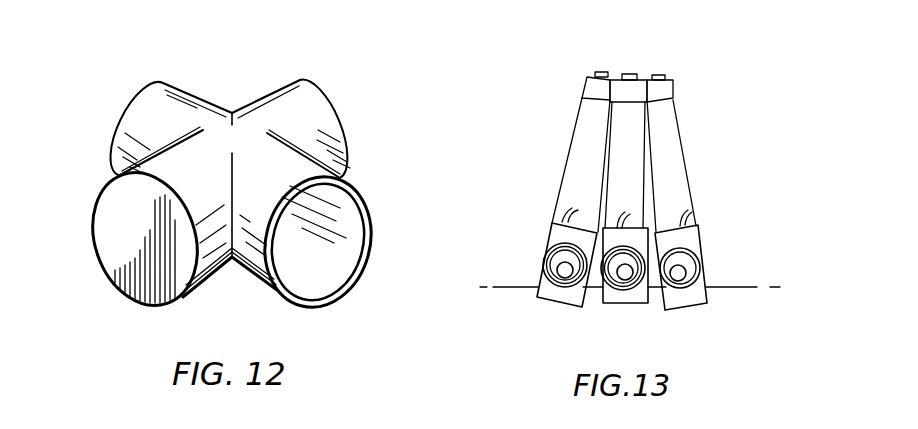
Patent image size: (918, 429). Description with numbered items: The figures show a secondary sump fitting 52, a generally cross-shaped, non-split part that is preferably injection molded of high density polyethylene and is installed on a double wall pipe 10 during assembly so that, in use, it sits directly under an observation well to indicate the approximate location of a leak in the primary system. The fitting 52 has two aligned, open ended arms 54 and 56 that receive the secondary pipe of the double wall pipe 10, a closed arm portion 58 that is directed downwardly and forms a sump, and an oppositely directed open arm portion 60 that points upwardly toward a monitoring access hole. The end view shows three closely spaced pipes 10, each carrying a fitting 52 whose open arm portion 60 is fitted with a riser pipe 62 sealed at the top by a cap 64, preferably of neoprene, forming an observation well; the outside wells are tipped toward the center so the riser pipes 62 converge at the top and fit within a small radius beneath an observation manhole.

In FIG. 13, the double wall pipe 10 is at (690, 270).
In FIG. 12, the secondary sump fitting 52 is at (330, 138).
In FIG. 13, the secondary sump fitting 52 is at (550, 240).
In FIG. 12, the open ended arm 54 is at (147, 110).
In FIG. 12, the open ended arm 56 is at (355, 181).
In FIG. 12, the closed arm portion 58 is at (113, 177).
In FIG. 12, the open arm portion 60 is at (315, 118).
In FIG. 13, the riser pipe 62 is at (583, 145).
In FIG. 13, the cap 64 is at (620, 77).